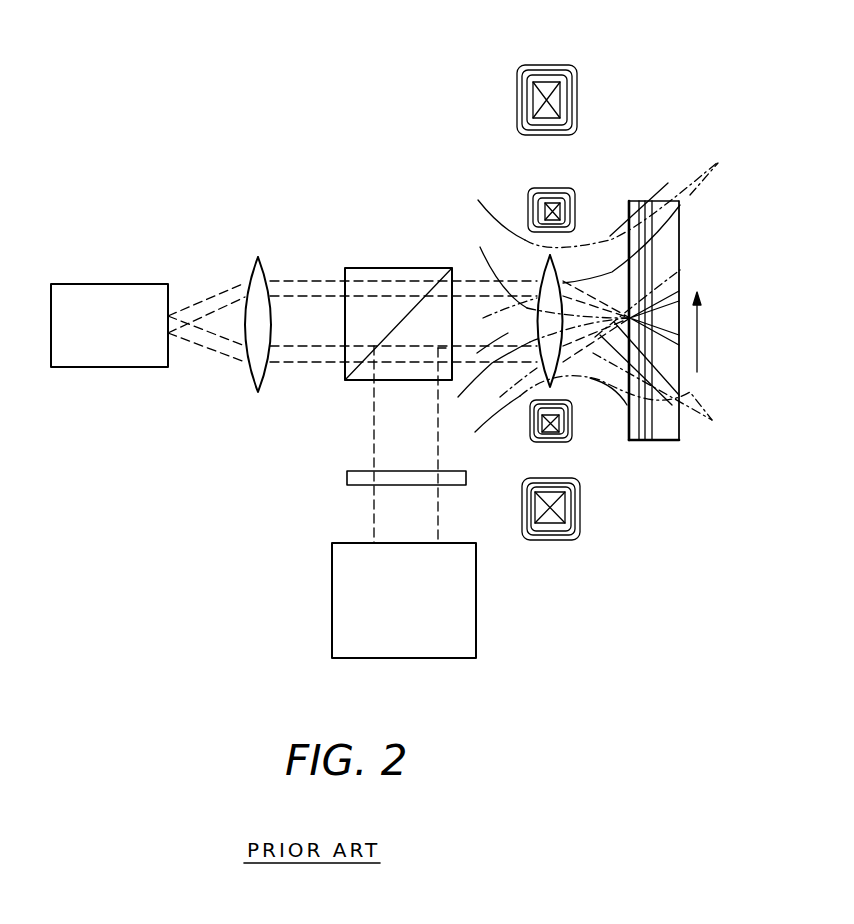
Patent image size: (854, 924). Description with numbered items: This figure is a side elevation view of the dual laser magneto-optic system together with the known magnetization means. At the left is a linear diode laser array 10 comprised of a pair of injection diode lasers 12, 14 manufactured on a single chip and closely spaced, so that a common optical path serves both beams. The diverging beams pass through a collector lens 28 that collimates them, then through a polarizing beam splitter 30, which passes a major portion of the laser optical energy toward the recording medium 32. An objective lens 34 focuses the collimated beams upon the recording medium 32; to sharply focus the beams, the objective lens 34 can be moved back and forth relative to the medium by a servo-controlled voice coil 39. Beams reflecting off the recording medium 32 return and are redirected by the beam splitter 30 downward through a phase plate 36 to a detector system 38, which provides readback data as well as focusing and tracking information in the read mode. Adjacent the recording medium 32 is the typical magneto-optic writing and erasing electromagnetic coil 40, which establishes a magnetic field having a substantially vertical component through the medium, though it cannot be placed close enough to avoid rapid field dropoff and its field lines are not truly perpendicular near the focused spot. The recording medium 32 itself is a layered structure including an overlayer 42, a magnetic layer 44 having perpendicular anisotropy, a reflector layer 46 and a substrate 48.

The linear diode laser array 10 is at (88, 281).
The injection diode laser 12 is at (170, 348).
The injection diode laser 14 is at (170, 306).
The collector lens 28 is at (262, 258).
The polarizing beam splitter 30 is at (378, 268).
The recording medium 32 is at (665, 316).
The objective lens 34 is at (563, 262).
The phase plate 36 is at (346, 479).
The detector system 38 is at (332, 592).
The servo-controlled voice coil 39 is at (575, 190).
The electromagnetic coil 40 is at (567, 66).
The overlayer 42 is at (633, 441).
The magnetic layer 44 is at (643, 442).
The reflector layer 46 is at (650, 442).
The substrate 48 is at (679, 432).